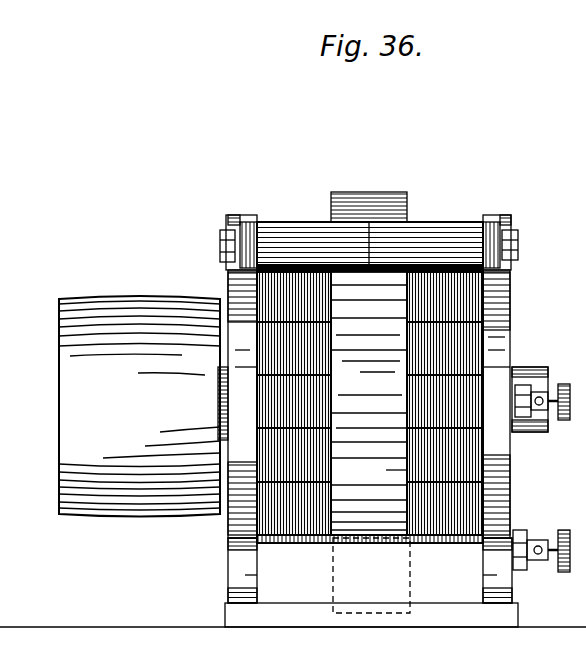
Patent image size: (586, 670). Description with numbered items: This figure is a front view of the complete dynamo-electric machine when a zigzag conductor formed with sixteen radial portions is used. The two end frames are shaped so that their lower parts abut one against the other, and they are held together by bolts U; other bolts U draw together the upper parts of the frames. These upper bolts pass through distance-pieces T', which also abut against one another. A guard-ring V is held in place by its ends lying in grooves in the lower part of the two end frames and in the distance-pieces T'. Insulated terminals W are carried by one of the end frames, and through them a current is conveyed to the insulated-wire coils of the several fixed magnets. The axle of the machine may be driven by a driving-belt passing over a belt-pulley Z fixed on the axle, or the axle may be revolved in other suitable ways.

The guard-ring V is at (203, 349).
The distance-pieces T' is at (370, 231).
The bolts U is at (370, 242).
The belt-pulley Z is at (143, 406).
The insulated terminals W is at (538, 545).